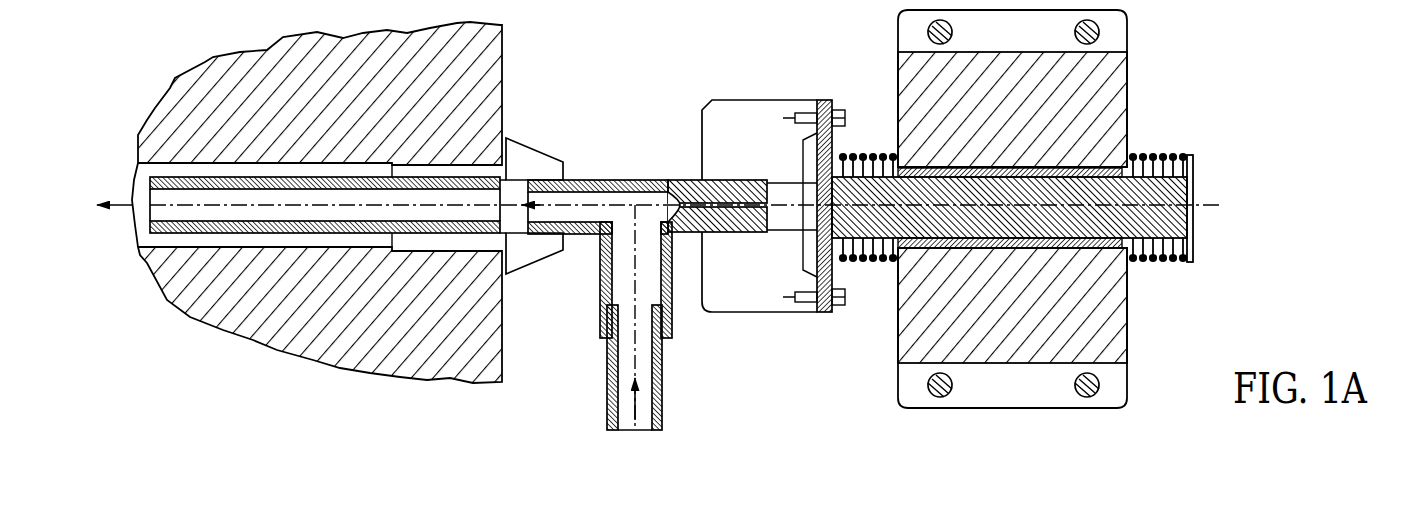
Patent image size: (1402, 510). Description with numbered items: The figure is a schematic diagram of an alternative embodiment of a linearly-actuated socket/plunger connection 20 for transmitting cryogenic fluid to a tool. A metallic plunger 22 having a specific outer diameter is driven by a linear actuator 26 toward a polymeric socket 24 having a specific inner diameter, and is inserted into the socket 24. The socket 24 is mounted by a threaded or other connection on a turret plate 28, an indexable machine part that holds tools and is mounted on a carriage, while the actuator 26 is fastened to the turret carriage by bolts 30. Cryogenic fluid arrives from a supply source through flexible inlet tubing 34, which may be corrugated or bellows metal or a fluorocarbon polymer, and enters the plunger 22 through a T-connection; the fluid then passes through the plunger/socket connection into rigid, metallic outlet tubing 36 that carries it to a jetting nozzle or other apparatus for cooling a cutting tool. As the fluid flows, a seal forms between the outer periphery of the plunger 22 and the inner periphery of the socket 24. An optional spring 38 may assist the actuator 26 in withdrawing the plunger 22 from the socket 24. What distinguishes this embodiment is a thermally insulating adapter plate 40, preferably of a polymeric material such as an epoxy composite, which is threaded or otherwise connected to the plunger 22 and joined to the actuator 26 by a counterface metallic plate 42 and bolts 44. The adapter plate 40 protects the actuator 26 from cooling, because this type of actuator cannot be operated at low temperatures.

The linearly-actuated socket/plunger connection 20 is at (1250, 160).
The metallic plunger 22 is at (572, 180).
The polymeric socket 24 is at (520, 153).
The linear actuator 26 is at (1115, 90).
The turret plate 28 is at (376, 365).
The bolts 30 is at (928, 392).
The inlet tubing 34 is at (667, 397).
The outlet tubing 36 is at (177, 177).
The spring 38 is at (1172, 260).
The thermally insulating adapter plate 40 is at (745, 120).
The counterface metallic plate 42 is at (823, 312).
The bolts 44 is at (842, 110).